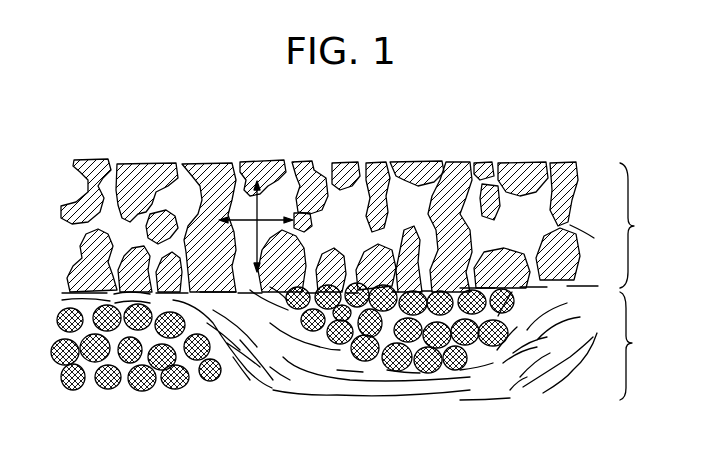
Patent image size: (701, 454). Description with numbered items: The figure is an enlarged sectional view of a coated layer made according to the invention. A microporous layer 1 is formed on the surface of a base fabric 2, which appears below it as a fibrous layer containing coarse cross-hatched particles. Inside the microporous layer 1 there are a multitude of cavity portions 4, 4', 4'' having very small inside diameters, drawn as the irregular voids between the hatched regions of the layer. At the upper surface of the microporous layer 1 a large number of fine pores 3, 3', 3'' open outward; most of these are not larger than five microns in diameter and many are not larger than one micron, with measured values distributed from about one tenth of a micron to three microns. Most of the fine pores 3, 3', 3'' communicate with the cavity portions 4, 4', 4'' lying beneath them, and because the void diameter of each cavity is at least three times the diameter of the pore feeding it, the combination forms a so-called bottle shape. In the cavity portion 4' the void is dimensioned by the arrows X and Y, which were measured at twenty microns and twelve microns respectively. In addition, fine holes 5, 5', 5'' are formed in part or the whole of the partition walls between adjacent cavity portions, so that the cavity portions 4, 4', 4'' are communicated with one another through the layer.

The microporous layer 1 is at (354, 196).
The base fabric 2 is at (349, 341).
The fine pore 3 is at (90, 161).
The fine pore 3' is at (152, 160).
The fine pore 3'' is at (272, 147).
The cavity portion 4 is at (209, 205).
The cavity portion 4' is at (310, 166).
The cavity portion 4'' is at (349, 157).
The fine hole 5 is at (169, 222).
The fine hole 5' is at (327, 230).
The fine hole 5'' is at (416, 236).